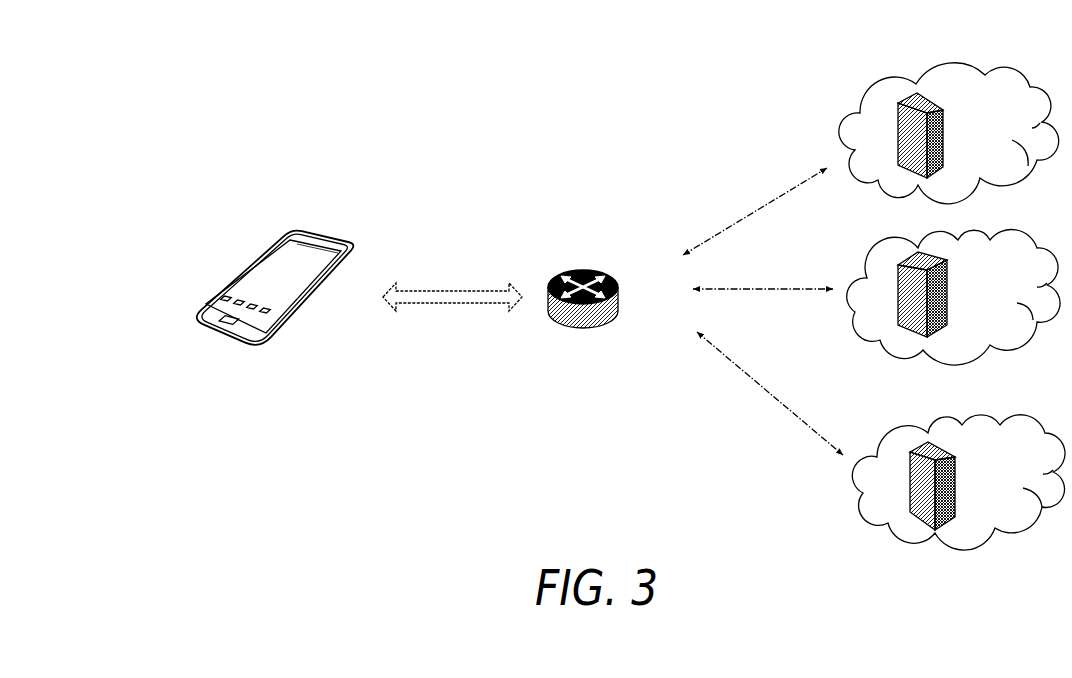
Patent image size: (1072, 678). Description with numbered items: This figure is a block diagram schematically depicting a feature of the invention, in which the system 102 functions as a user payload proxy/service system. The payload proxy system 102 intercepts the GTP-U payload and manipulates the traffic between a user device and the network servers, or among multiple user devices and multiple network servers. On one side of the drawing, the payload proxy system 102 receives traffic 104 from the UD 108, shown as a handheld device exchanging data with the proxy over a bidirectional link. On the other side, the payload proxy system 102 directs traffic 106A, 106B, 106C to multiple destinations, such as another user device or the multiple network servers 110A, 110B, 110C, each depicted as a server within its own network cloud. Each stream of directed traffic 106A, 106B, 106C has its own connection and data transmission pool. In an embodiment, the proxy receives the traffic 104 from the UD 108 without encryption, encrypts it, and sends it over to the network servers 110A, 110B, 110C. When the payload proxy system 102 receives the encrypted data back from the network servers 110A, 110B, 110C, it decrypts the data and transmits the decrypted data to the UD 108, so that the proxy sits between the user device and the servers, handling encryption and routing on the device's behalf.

The payload proxy system 102 is at (578, 270).
The traffic 104 is at (437, 300).
The traffic 106A is at (758, 210).
The traffic 106B is at (778, 289).
The traffic 106C is at (738, 370).
The UD 108 is at (283, 248).
The network server 110A is at (910, 93).
The network server 110B is at (912, 332).
The network server 110C is at (930, 527).